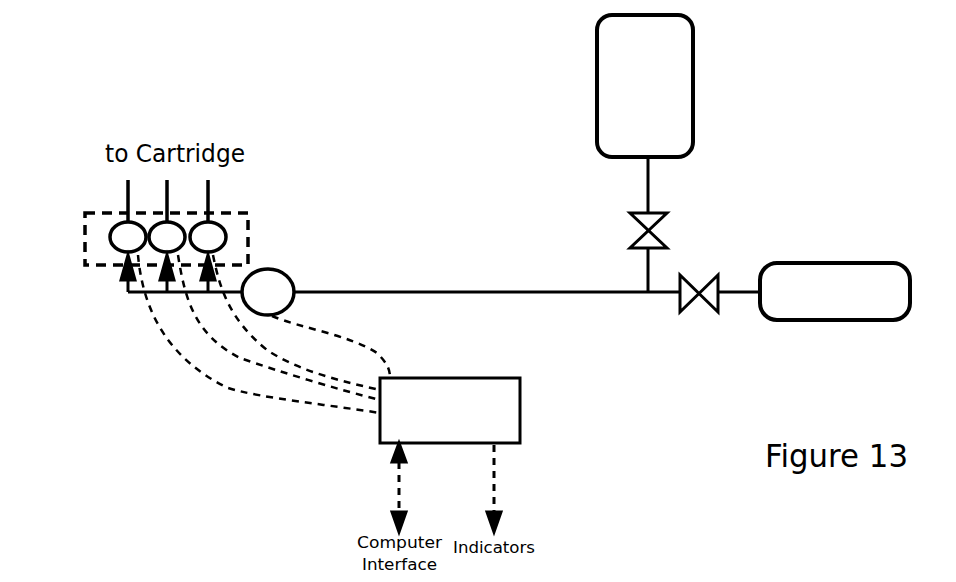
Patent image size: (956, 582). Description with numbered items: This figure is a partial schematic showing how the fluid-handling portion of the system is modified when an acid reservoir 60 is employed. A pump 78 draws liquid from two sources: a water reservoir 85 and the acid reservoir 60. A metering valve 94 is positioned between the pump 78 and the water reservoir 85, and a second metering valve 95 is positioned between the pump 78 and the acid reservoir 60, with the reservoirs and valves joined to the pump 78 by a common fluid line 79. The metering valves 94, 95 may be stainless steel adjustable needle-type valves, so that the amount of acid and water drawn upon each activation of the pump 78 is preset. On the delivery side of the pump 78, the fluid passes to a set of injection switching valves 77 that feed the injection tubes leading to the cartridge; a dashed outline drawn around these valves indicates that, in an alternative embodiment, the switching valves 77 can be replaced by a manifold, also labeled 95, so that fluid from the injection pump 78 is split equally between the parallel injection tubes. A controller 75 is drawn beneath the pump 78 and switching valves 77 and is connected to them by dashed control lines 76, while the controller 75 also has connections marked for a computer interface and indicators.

The acid reservoir 60 is at (835, 291).
The controller 75 is at (450, 410).
The control lines 76 is at (216, 399).
The injection switching valves 77 is at (96, 238).
The pump 78 is at (268, 292).
The fluid line 79 is at (535, 305).
The water reservoir 85 is at (645, 114).
The metering valve 94 is at (678, 222).
The metering valve 95 is at (261, 211).